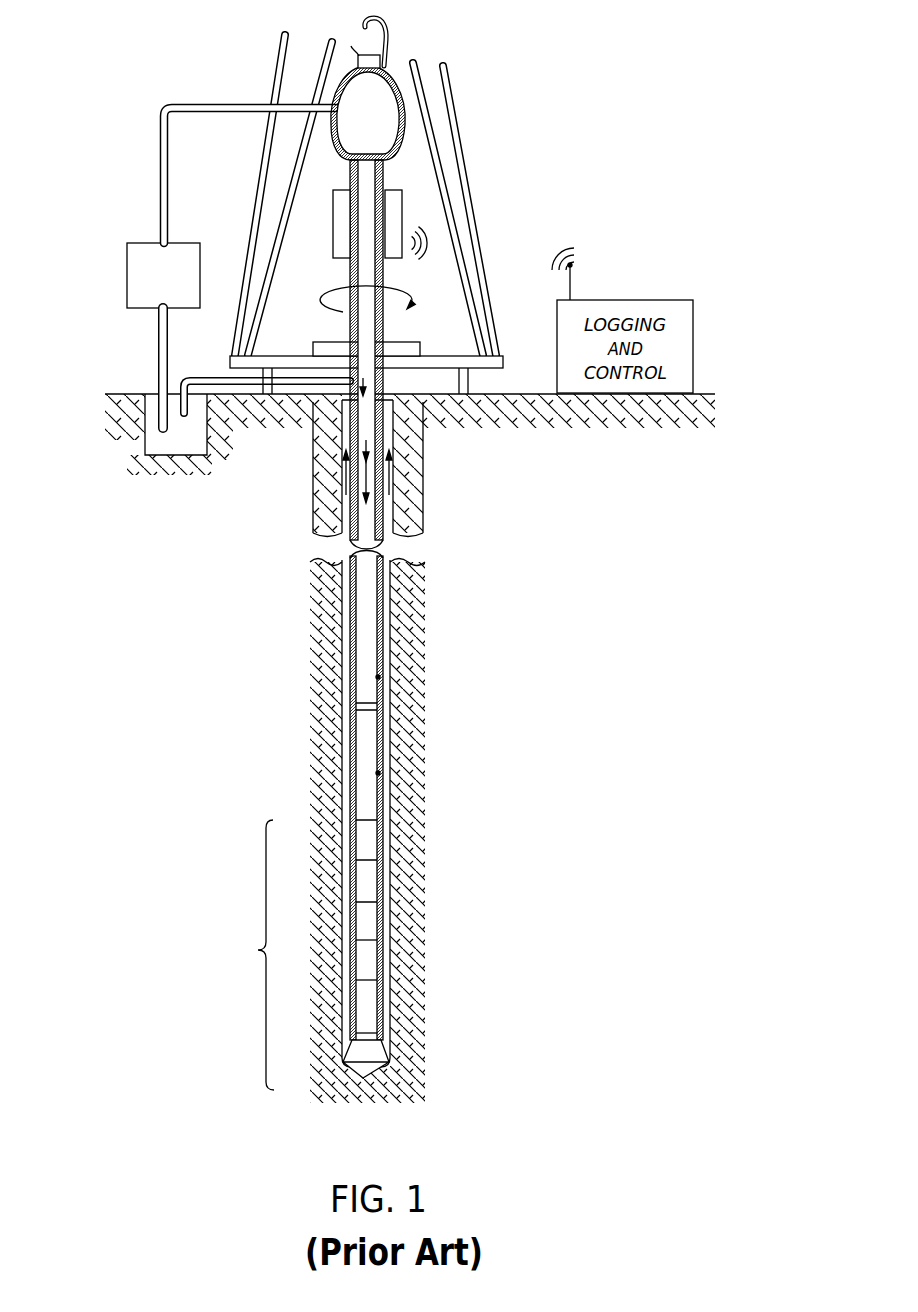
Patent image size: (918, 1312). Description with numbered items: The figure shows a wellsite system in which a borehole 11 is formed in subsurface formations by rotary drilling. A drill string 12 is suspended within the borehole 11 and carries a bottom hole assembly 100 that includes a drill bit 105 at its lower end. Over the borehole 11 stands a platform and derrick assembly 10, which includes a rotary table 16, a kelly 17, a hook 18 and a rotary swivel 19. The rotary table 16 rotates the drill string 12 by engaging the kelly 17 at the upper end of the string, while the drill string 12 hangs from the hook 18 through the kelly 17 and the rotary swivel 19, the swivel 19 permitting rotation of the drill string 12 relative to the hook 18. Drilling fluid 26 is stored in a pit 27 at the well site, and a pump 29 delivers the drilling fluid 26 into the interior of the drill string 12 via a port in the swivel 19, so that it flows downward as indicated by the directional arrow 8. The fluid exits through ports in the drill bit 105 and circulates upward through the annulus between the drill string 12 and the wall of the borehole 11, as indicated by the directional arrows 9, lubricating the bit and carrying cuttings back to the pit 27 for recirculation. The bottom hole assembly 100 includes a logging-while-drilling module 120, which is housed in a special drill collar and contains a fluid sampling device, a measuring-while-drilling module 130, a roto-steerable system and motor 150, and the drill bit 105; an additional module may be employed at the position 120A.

The hook 18 is at (364, 24).
The platform and derrick assembly 10 is at (483, 98).
The rotary swivel 19 is at (357, 150).
The kelly 17 is at (356, 328).
The drill string 12 is at (362, 392).
The rotary table 16 is at (402, 346).
The borehole 11 is at (399, 393).
The pump 29 is at (137, 311).
The pit 27 is at (148, 392).
The drilling fluid 26 is at (178, 462).
The directional arrows 9 is at (343, 466).
The directional arrow 8 is at (366, 470).
The bottom hole assembly 100 is at (254, 950).
The logging-while-drilling module 120 is at (374, 880).
The measuring-while-drilling module 130 is at (374, 923).
The additional LWD/MWD module 120A is at (374, 964).
The roto-steerable system and motor 150 is at (374, 1003).
The drill bit 105 is at (390, 1050).